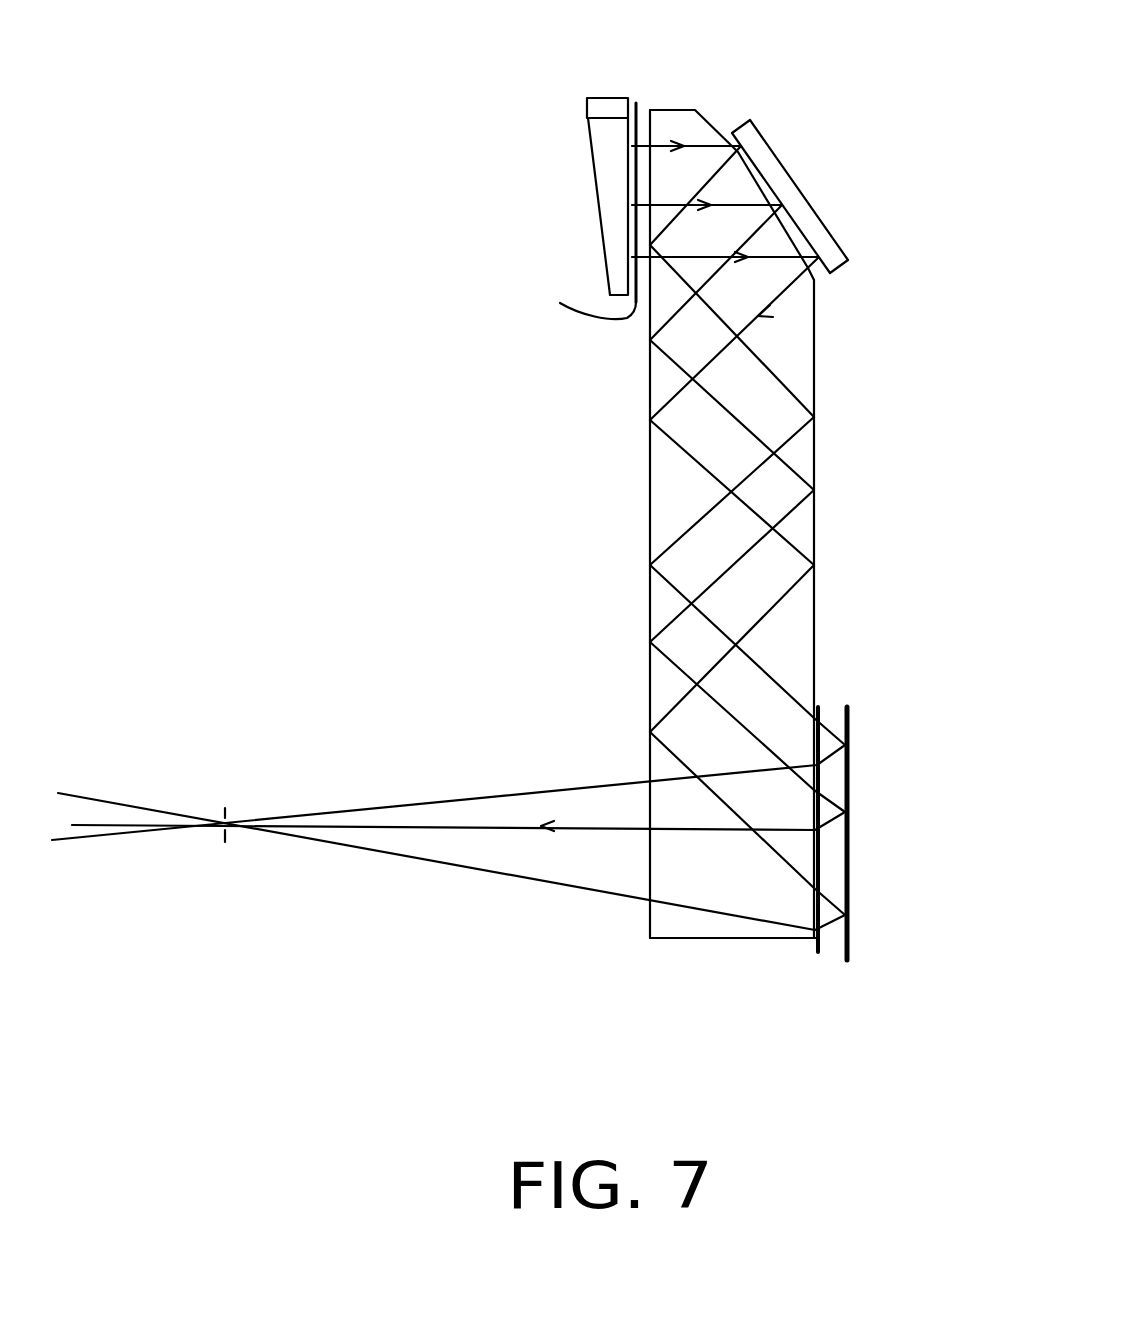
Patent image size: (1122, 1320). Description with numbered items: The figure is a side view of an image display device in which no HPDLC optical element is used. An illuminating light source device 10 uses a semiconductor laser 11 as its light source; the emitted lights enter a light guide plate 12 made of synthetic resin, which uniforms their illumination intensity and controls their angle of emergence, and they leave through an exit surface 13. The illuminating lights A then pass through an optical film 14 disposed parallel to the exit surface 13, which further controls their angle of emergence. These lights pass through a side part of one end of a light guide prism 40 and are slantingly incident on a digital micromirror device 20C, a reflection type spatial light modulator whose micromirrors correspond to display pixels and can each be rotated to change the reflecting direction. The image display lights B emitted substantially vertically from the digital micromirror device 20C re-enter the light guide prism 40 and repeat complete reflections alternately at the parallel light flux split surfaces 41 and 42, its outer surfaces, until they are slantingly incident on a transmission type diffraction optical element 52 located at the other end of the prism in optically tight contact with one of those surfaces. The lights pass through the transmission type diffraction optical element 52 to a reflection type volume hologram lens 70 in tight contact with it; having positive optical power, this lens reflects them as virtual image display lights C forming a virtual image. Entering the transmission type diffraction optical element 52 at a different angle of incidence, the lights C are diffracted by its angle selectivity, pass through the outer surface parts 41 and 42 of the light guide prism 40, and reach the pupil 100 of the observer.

The illuminating light source device 10 is at (451, 130).
The semiconductor laser 11 is at (587, 106).
The light guide plate 12 is at (603, 204).
The exit surface 13 is at (640, 118).
The optical film 14 is at (560, 303).
The digital micromirror device 20C is at (837, 236).
The light guide prism 40 is at (492, 524).
The light flux split surface 41 is at (814, 373).
The light flux split surface 42 is at (650, 608).
The transmission type diffraction optical element 52 is at (817, 707).
The reflection type volume hologram lens 70 is at (847, 960).
The pupil 100 is at (231, 806).